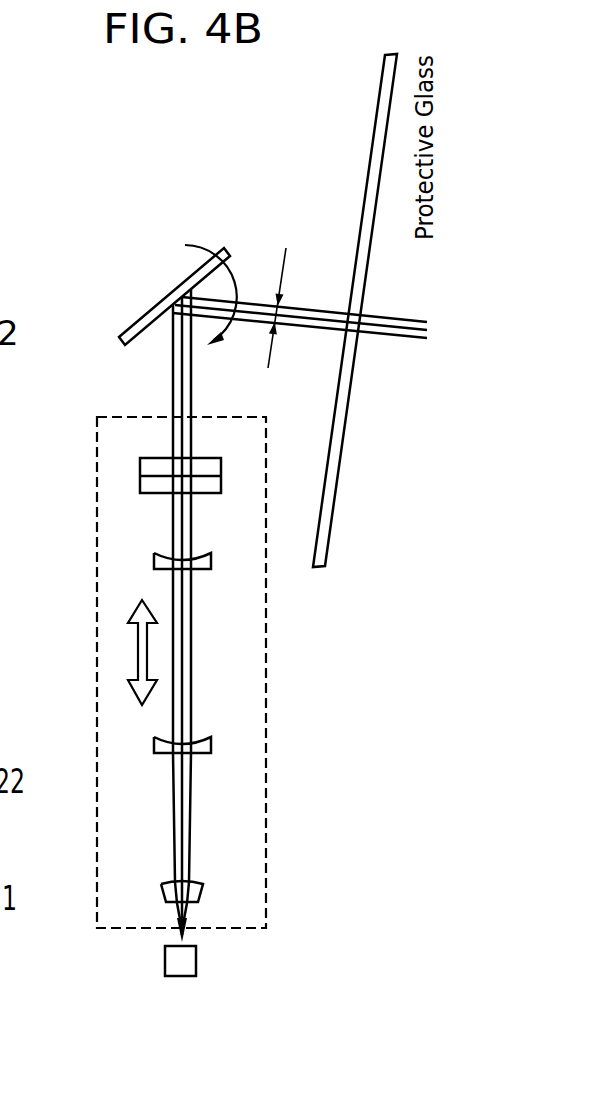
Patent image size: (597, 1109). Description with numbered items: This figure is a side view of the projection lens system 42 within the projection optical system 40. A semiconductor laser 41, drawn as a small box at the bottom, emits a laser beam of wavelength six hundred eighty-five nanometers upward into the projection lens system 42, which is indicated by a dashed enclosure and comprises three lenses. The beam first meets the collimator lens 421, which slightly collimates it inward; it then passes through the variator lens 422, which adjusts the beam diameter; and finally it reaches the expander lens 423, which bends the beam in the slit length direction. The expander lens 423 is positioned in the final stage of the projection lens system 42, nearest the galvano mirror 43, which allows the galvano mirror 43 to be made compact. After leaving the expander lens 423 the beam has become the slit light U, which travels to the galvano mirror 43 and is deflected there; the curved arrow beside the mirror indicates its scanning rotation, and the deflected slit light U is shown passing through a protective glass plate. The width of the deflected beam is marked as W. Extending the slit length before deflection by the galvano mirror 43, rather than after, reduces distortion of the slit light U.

The projection optical system 40 is at (240, 137).
The semiconductor laser 41 is at (196, 966).
The projection lens system 42 is at (127, 417).
The galvano mirror 43 is at (150, 311).
The collimator lens 421 is at (203, 896).
The variator lens 422 is at (211, 746).
The expander lens 423 is at (140, 468).
The slit light U is at (190, 390).
The beam width W is at (286, 308).